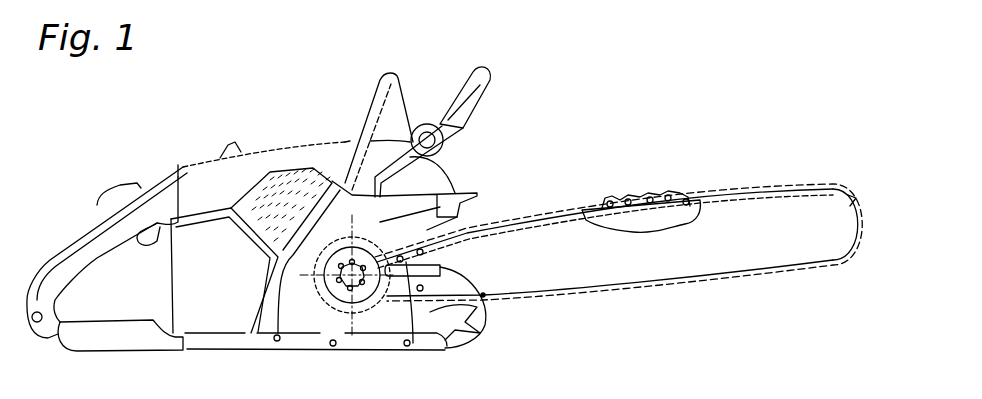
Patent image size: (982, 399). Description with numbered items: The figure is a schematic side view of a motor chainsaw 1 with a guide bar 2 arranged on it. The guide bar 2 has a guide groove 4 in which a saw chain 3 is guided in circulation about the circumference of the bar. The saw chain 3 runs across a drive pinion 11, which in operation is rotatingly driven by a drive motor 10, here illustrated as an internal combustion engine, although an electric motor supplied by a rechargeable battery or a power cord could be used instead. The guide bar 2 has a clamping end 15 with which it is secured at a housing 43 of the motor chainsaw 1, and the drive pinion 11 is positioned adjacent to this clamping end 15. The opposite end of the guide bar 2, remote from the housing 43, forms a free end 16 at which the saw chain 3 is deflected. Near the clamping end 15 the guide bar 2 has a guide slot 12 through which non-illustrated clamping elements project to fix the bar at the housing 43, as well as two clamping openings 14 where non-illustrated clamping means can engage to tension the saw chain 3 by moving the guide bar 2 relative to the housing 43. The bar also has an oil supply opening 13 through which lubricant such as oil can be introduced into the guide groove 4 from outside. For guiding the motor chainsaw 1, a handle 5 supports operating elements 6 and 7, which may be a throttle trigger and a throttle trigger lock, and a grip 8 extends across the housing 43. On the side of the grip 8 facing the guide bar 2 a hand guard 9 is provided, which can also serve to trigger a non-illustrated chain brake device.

The motor chainsaw 1 is at (643, 62).
The guide bar 2 is at (723, 255).
The saw chain 3 is at (666, 188).
The guide groove 4 is at (590, 200).
The handle 5 is at (77, 257).
The operating element 6 is at (172, 222).
The operating element 7 is at (103, 194).
The grip 8 is at (363, 122).
The hand guard 9 is at (481, 76).
The drive motor 10 is at (278, 190).
The drive pinion 11 is at (347, 283).
The guide slot 12 is at (483, 295).
The oil supply opening 13 is at (427, 247).
The clamping openings 14 is at (401, 262).
The clamping end 15 is at (358, 285).
The free end 16 is at (856, 198).
The housing 43 is at (430, 337).